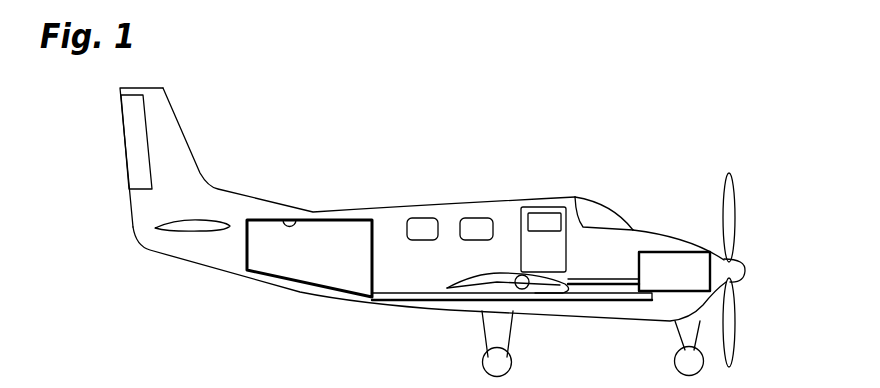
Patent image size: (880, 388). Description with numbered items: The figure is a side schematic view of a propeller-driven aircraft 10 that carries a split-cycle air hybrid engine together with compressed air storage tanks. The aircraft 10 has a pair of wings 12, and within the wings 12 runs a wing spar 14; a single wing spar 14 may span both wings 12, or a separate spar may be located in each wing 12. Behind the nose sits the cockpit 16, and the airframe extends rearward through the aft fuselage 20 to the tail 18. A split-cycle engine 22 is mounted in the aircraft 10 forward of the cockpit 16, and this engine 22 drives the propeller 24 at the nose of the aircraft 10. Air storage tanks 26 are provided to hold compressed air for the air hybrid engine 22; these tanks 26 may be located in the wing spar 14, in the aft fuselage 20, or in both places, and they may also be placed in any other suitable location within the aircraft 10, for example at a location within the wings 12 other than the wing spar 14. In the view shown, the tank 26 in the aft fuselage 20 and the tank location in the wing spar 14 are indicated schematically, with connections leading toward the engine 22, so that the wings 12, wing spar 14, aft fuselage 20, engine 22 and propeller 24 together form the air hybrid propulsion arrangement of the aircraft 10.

The propeller-driven aircraft 10 is at (518, 181).
The wings 12 is at (465, 278).
The wing spar 14 is at (517, 277).
The cockpit 16 is at (586, 227).
The tail 18 is at (128, 205).
The aft fuselage 20 is at (247, 282).
The split-cycle engine 22 is at (676, 248).
The propeller 24 is at (728, 322).
The air storage tanks 26 is at (298, 221).